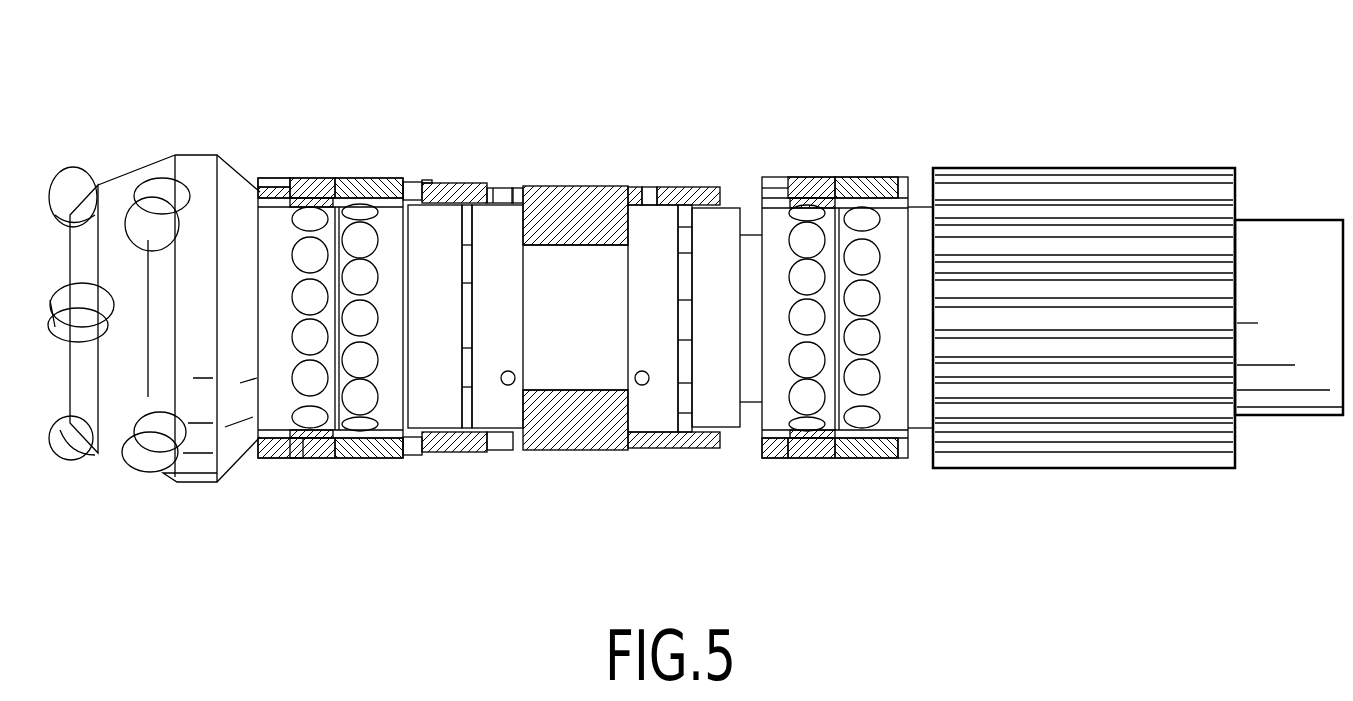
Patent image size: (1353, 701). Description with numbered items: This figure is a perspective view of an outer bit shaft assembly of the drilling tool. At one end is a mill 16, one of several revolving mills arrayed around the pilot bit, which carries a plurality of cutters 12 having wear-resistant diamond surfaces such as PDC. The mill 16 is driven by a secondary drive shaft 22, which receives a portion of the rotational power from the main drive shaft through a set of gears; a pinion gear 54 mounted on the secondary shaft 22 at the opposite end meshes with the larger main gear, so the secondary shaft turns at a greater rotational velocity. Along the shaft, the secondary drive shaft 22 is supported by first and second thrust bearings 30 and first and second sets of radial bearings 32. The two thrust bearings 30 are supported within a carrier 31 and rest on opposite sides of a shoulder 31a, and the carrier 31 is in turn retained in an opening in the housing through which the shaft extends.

The cutters 12 is at (65, 178).
The mill 16 is at (190, 494).
The secondary drive shaft 22 is at (836, 472).
The thrust bearing 30 is at (445, 415).
The carrier 31 is at (560, 205).
The shoulder 31a is at (582, 390).
The radial bearings 32 is at (390, 215).
The pinion gear 54 is at (1073, 442).